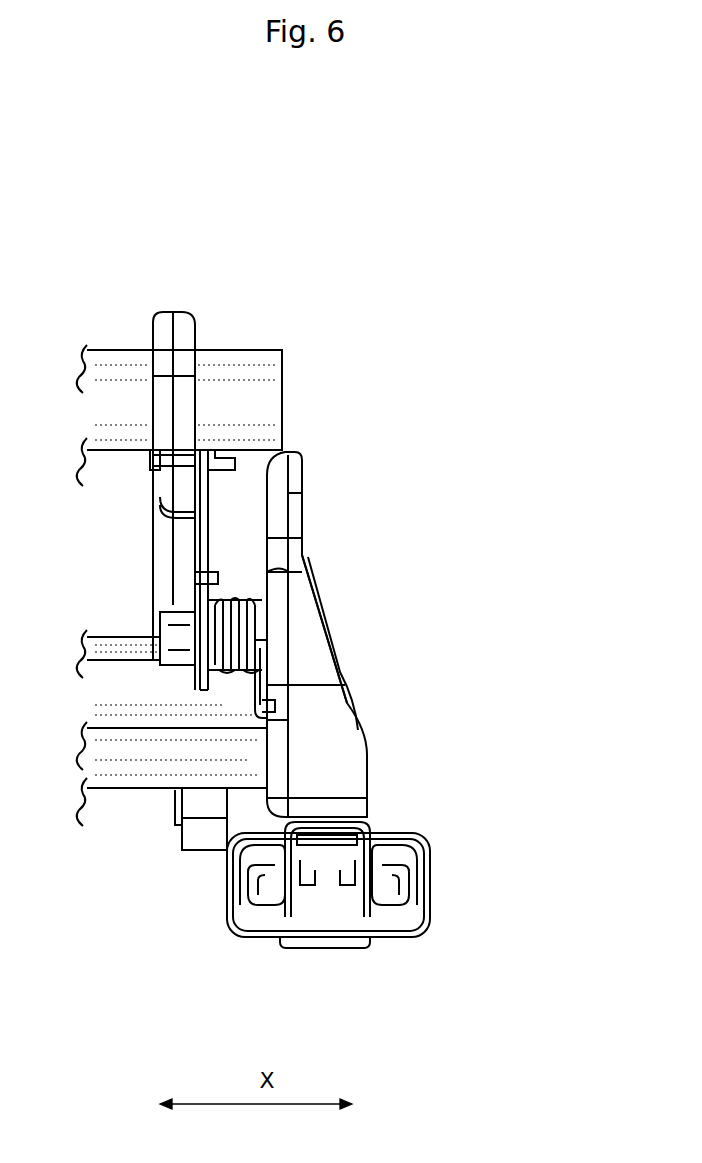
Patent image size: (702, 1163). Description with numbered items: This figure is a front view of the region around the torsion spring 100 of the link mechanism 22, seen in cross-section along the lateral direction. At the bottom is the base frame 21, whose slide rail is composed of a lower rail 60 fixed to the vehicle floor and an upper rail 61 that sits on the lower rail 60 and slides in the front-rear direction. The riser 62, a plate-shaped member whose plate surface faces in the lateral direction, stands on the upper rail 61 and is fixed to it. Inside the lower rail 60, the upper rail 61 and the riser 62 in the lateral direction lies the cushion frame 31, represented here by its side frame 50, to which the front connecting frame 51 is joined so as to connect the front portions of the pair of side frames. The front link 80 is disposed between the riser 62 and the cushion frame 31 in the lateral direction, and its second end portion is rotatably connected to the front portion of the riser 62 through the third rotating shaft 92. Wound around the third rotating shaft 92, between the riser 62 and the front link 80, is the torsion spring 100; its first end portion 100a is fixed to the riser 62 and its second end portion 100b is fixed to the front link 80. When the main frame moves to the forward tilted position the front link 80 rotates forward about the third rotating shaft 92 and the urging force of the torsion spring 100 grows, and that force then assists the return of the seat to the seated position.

The cushion frame 31 is at (178, 298).
The side frame 50 is at (185, 323).
The front connecting frame 51 is at (258, 355).
The front link 80 is at (209, 517).
The second end portion 100b is at (212, 560).
The torsion spring 100 is at (242, 597).
The link mechanism 22 is at (388, 603).
The third rotating shaft 92 is at (257, 644).
The first end portion 100a is at (272, 703).
The riser 62 is at (363, 735).
The upper rail 61 is at (363, 817).
The lower rail 60 is at (430, 888).
The base frame 21 is at (425, 938).